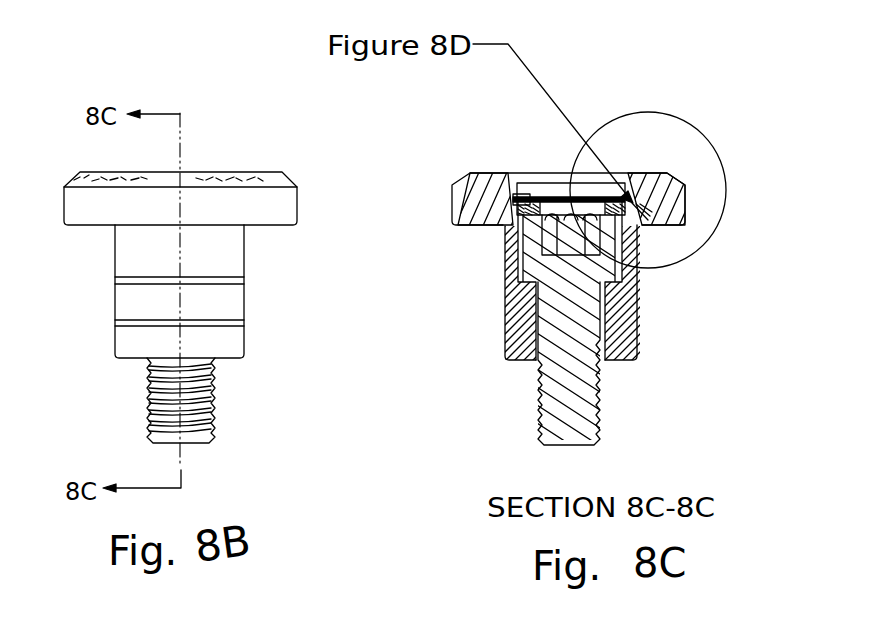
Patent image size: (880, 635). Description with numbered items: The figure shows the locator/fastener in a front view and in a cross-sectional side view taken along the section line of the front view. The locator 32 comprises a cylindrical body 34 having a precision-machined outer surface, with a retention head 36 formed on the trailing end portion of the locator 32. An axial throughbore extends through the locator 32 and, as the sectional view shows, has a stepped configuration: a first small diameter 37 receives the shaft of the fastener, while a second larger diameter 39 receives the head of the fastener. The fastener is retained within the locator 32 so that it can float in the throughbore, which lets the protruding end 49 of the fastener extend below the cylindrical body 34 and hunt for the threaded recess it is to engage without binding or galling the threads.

In FIG. 8B, the locator 32 is at (226, 162).
In FIG. 8B, the cylindrical body 34 is at (112, 268).
In FIG. 8B, the retention head 36 is at (255, 222).
In FIG. 8C, the retention head 36 is at (452, 203).
In FIG. 8C, the first small diameter 37 is at (545, 335).
In FIG. 8C, the second larger diameter 39 is at (598, 235).
In FIG. 8B, the protruding end 49 is at (217, 405).
In FIG. 8C, the protruding end 49 is at (603, 397).